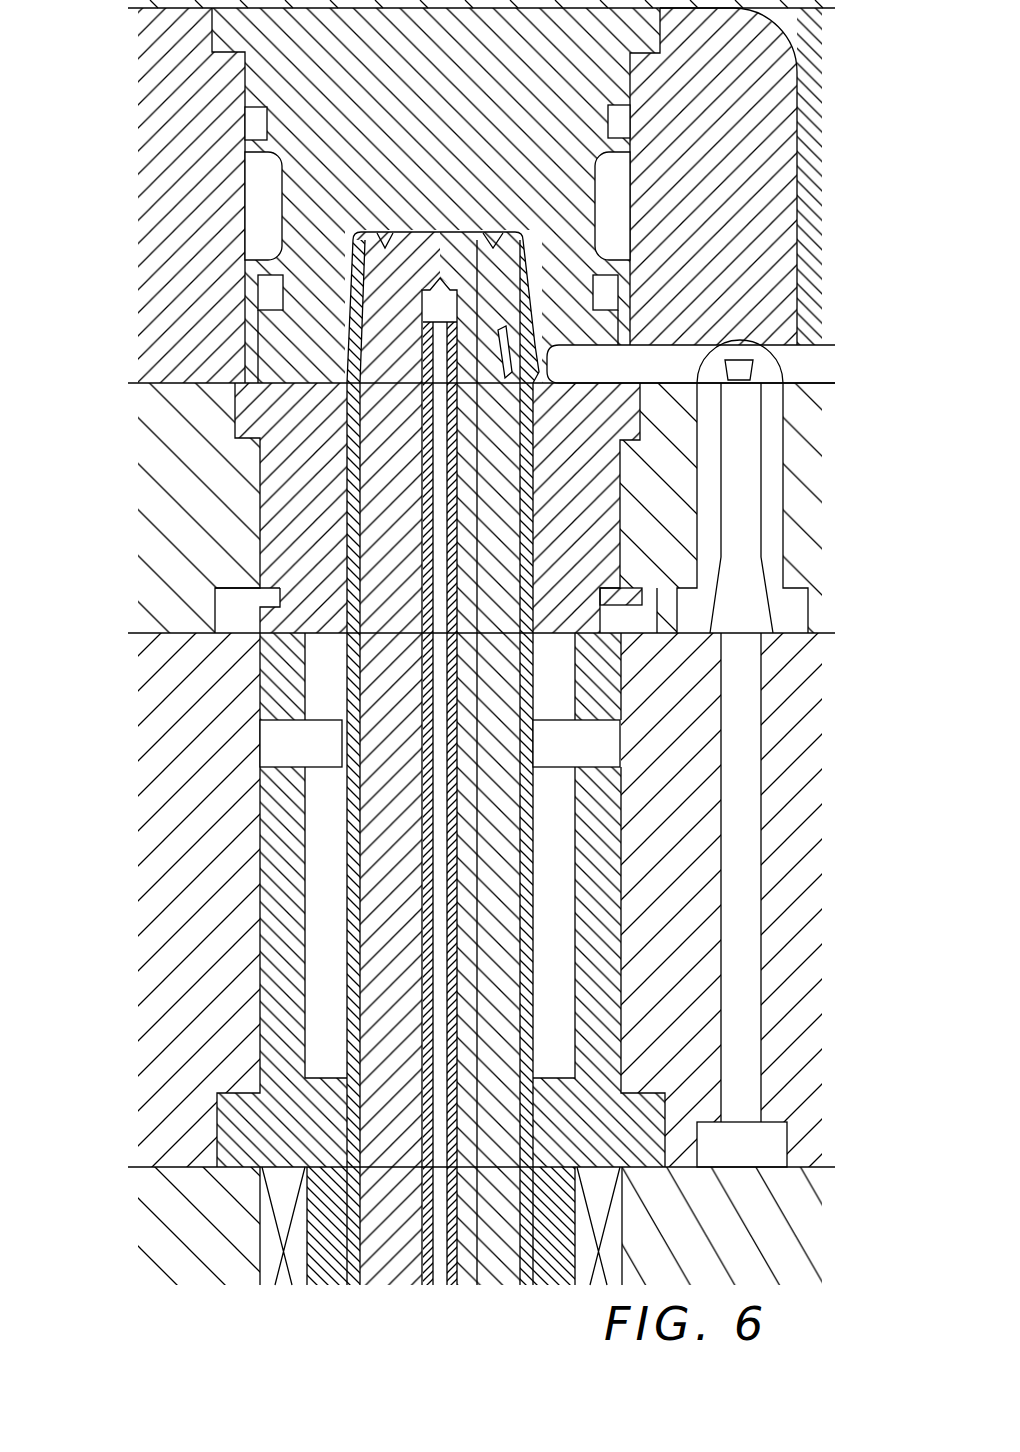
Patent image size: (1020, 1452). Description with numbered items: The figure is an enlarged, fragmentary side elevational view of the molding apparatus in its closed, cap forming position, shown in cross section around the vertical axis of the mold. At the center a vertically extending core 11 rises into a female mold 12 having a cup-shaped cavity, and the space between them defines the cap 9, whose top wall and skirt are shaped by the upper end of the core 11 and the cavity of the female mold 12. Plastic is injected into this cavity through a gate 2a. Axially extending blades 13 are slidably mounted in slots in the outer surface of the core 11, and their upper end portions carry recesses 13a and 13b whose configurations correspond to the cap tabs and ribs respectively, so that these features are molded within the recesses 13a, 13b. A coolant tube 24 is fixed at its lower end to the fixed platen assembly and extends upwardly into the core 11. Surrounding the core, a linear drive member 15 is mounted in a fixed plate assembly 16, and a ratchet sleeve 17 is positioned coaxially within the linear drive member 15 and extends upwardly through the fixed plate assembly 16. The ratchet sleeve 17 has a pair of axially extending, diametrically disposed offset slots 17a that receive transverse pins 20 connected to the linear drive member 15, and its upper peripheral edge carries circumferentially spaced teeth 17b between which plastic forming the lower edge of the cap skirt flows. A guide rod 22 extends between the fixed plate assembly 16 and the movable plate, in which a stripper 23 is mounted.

The female mold 12 is at (275, 85).
The recess 13b is at (505, 275).
The cap 9 is at (338, 322).
The gate 2a is at (607, 370).
The recess 13a is at (505, 340).
The teeth 17b is at (536, 382).
The stripper 23 is at (268, 540).
The transverse pins 20 is at (272, 752).
The linear drive member 15 is at (272, 830).
The core 11 is at (366, 812).
The blades 13 is at (508, 815).
The guide rod 22 is at (745, 838).
The offset slots 17a is at (315, 950).
The fixed plate assembly 16 is at (110, 1168).
The ratchet sleeve 17 is at (310, 1219).
The coolant tube 24 is at (452, 1275).